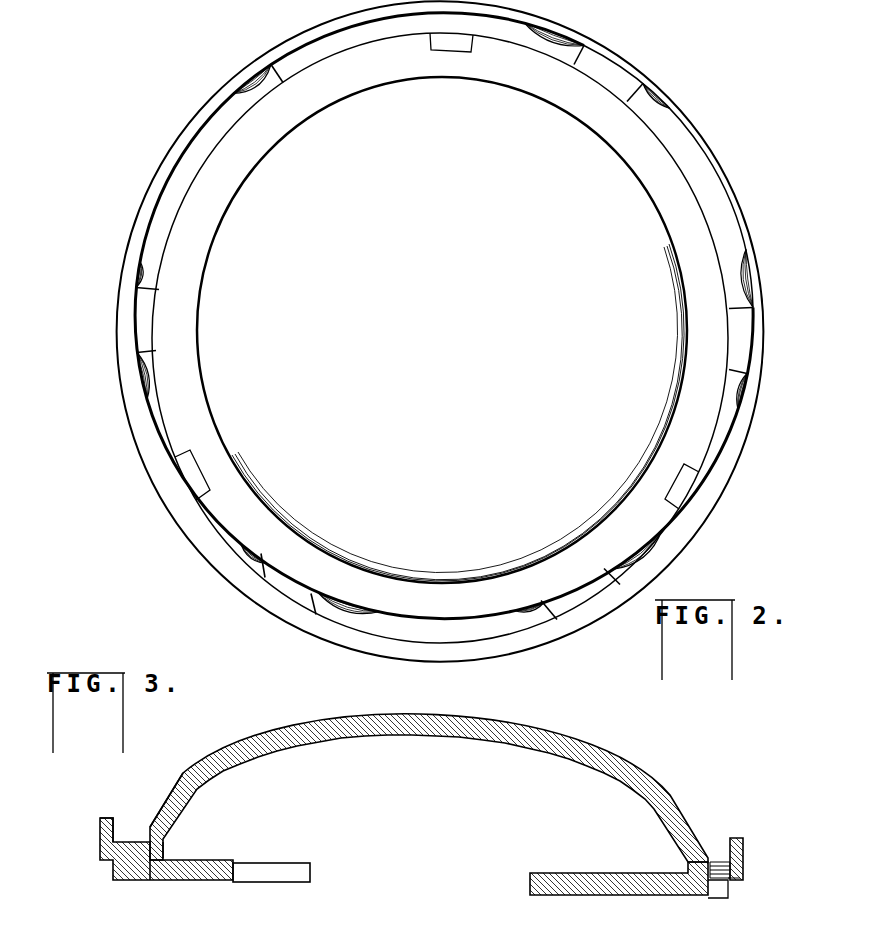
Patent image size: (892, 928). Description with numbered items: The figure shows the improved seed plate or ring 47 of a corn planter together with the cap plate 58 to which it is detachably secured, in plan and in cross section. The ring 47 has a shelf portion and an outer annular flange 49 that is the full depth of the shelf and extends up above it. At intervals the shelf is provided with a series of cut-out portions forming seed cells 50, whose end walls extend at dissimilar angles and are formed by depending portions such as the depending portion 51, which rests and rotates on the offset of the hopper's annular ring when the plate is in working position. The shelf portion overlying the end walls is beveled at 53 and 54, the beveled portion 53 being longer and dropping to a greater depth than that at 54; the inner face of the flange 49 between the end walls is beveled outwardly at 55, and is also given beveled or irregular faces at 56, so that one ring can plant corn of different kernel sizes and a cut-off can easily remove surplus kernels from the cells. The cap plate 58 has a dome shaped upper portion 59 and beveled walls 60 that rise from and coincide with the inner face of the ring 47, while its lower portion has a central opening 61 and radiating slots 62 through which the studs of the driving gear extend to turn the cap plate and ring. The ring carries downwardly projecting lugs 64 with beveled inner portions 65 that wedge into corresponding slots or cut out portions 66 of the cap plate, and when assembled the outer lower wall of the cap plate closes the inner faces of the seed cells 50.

In FIG. 2, the seed plate or ring 47 is at (738, 474).
In FIG. 3, the seed plate or ring 47 is at (381, 873).
In FIG. 3, the outer annular flange 49 is at (100, 832).
In FIG. 2, the seed cells 50 is at (737, 350).
In FIG. 3, the depending portion 51 is at (720, 887).
In FIG. 2, the beveled portion 53 is at (735, 286).
In FIG. 3, the beveled portion 53 is at (724, 881).
In FIG. 2, the beveled portion 54 is at (725, 397).
In FIG. 3, the beveled portion 54 is at (454, 914).
In FIG. 3, the outwardly beveled face of flange 55 is at (800, 856).
In FIG. 2, the bevel portion of flange 56 is at (742, 277).
In FIG. 3, the bevel portion of flange 56 is at (356, 927).
In FIG. 2, the cap plate 58 is at (442, 330).
In FIG. 3, the cap plate 58 is at (429, 788).
In FIG. 2, the dome shaped upper portion 59 is at (300, 307).
In FIG. 3, the dome shaped upper portion 59 is at (341, 719).
In FIG. 2, the beveled walls 60 is at (205, 200).
In FIG. 3, the beveled walls 60 is at (155, 798).
In FIG. 3, the central opening 61 is at (390, 857).
In FIG. 3, the radiating slots 62 is at (290, 852).
In FIG. 2, the lugs 64 is at (675, 478).
In FIG. 3, the lugs 64 is at (132, 880).
In FIG. 3, the beveled inner portions 65 is at (160, 850).
In FIG. 2, the slots or cut out portions 66 is at (458, 52).